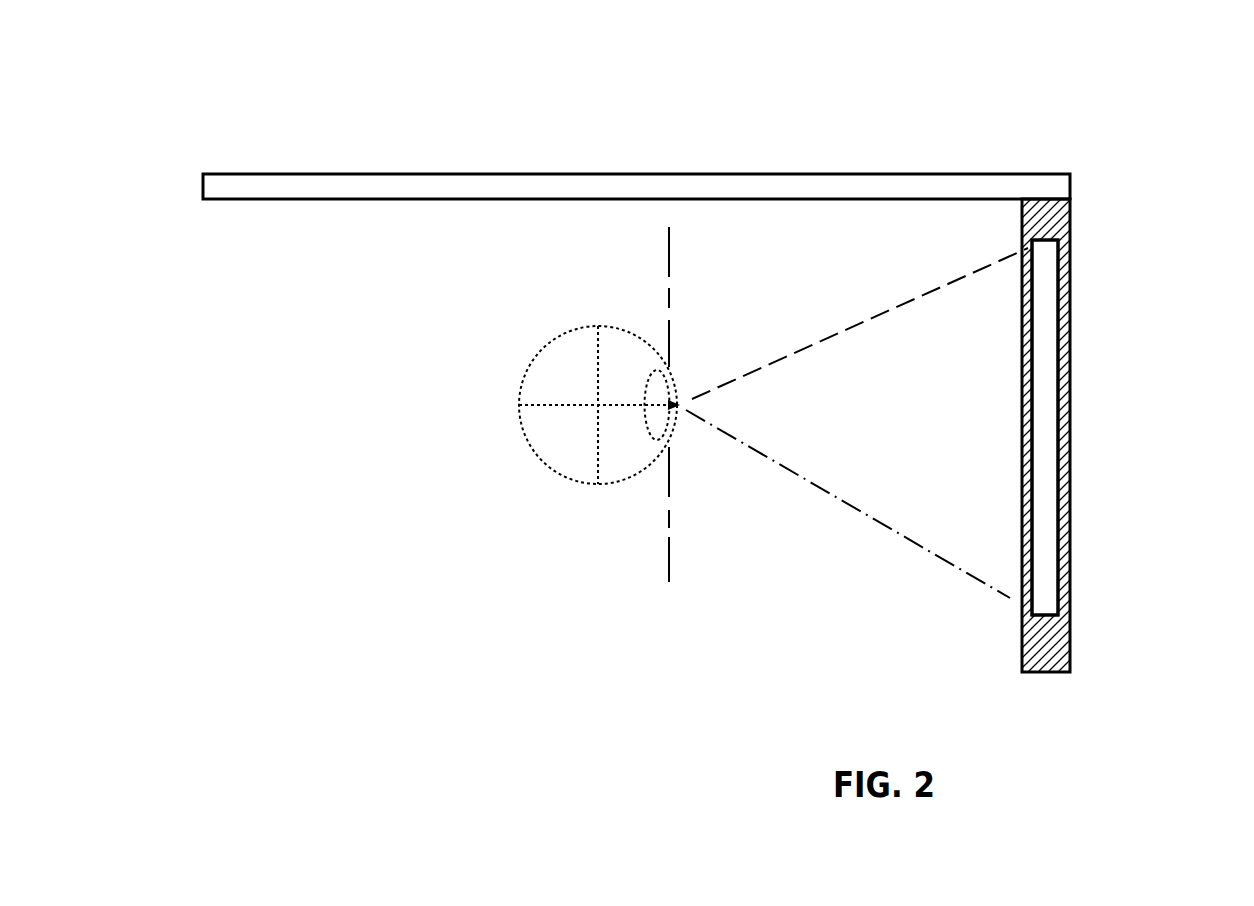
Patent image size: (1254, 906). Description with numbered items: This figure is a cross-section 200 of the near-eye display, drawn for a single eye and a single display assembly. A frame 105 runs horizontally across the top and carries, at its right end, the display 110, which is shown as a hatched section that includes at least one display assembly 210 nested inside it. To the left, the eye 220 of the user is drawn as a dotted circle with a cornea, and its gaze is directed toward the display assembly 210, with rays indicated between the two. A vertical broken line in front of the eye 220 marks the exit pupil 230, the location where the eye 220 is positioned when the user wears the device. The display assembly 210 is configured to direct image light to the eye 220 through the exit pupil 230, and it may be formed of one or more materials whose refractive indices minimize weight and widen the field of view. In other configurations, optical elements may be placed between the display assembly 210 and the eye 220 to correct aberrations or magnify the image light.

The cross-section 200 is at (375, 76).
The frame 105 is at (928, 171).
The display 110 is at (1072, 550).
The display assembly 210 is at (1042, 371).
The eye 220 is at (558, 334).
The exit pupil 230 is at (664, 506).